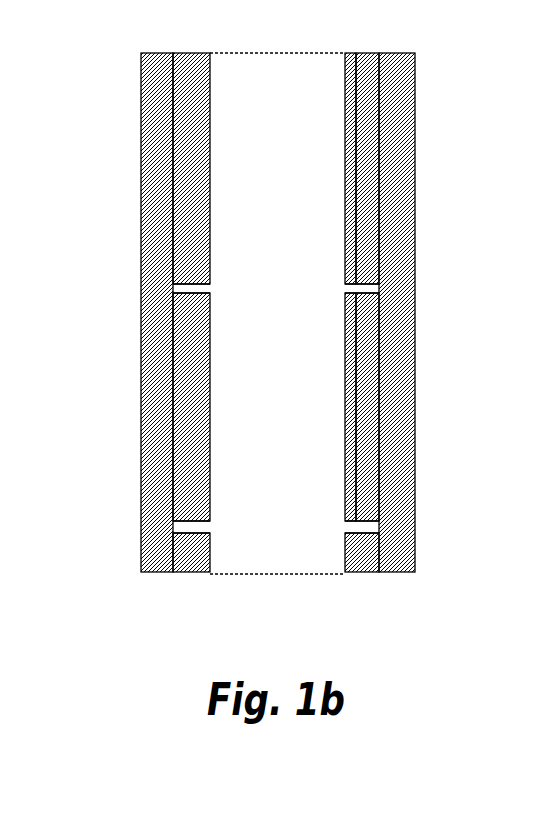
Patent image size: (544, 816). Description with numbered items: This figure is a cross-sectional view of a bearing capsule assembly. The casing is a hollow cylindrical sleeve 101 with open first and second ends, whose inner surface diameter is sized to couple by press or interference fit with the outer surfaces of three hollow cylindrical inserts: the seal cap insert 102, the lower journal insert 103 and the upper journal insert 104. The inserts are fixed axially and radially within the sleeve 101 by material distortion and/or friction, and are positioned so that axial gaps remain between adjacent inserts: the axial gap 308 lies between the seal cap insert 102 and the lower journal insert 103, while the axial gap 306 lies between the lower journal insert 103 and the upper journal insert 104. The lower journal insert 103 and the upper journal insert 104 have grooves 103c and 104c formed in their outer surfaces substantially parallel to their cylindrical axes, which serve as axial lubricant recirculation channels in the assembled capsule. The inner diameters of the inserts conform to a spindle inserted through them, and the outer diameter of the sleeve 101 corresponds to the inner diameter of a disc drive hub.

The hollow cylindrical sleeve 101 is at (150, 363).
The seal cap insert 102 is at (348, 558).
The lower journal insert 103 is at (367, 462).
The groove of lower journal 103c is at (345, 388).
The upper journal insert 104 is at (362, 190).
The groove of upper journal 104c is at (345, 138).
The axial gap between lower journal insert and upper journal insert 306 is at (345, 287).
The axial gap between seal cap insert and lower journal insert 308 is at (353, 528).